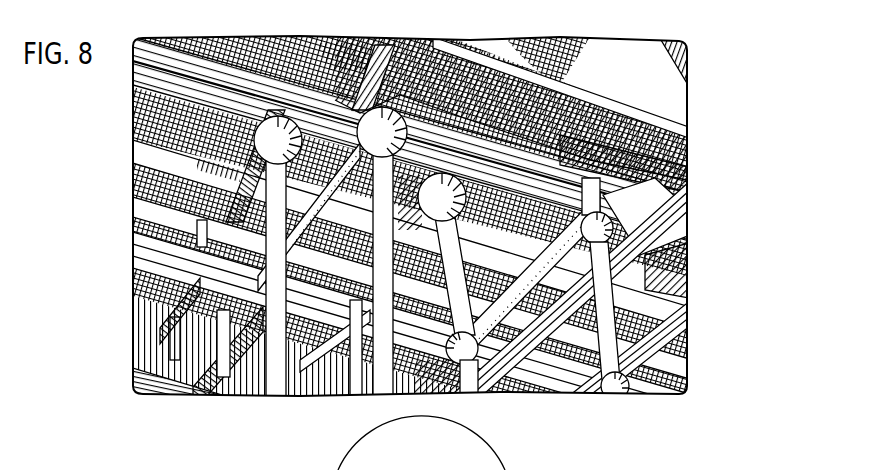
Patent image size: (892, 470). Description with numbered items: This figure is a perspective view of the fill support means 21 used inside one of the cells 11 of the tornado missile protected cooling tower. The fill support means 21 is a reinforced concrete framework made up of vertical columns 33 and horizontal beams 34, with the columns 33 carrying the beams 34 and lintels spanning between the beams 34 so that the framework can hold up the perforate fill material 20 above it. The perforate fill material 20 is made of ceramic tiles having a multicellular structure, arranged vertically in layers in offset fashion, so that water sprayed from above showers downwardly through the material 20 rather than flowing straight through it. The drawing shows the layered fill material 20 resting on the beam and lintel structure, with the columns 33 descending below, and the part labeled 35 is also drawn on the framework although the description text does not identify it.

The floor slab panel 11 is at (520, 41).
The concrete deck layer 20 is at (136, 108).
The girder 21 is at (138, 262).
The columns 33 is at (272, 396).
The beams 34 is at (205, 64).
The joists 35 is at (246, 114).